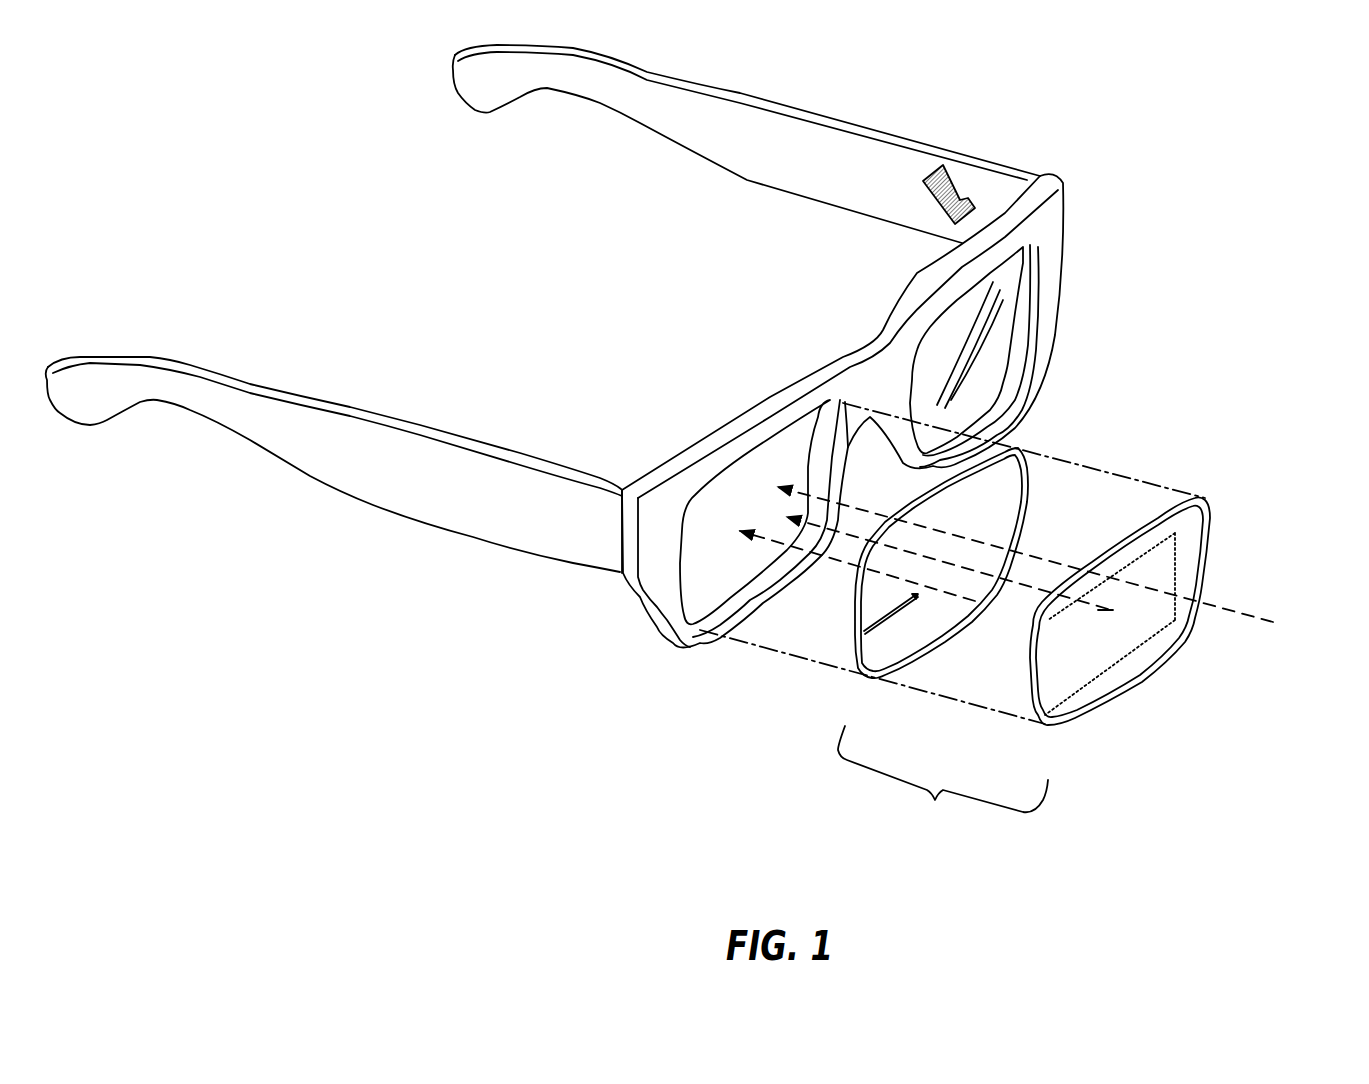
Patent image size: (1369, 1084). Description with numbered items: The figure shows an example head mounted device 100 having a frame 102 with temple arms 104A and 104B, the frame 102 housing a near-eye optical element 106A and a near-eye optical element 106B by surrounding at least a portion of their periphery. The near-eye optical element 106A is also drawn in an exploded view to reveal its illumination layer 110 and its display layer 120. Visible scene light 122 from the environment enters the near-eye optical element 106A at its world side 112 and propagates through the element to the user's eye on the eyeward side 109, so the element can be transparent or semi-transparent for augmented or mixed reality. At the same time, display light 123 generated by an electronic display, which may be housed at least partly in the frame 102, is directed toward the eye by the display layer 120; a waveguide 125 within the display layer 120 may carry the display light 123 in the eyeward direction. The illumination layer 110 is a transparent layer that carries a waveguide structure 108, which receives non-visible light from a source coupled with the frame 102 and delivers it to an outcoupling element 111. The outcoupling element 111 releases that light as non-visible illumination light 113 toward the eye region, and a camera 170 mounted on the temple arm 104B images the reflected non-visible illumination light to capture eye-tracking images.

The head mounted device 100 is at (1296, 149).
The frame 102 is at (890, 394).
The temple arm 104A is at (436, 496).
The temple arm 104B is at (789, 155).
The near-eye optical element 106A is at (943, 781).
The near-eye optical element 106B is at (1016, 336).
The waveguide structure 108 is at (888, 621).
The eyeward side 109 is at (684, 391).
The illumination layer 110 is at (850, 677).
The outcoupling element 111 is at (920, 593).
The world side 112 is at (1200, 701).
The non-visible illumination light 113 is at (845, 567).
The display layer 120 is at (1050, 725).
The visible scene light 122 is at (1237, 615).
The display light 123 is at (1106, 611).
The waveguide 125 is at (1100, 677).
The camera 170 is at (953, 170).